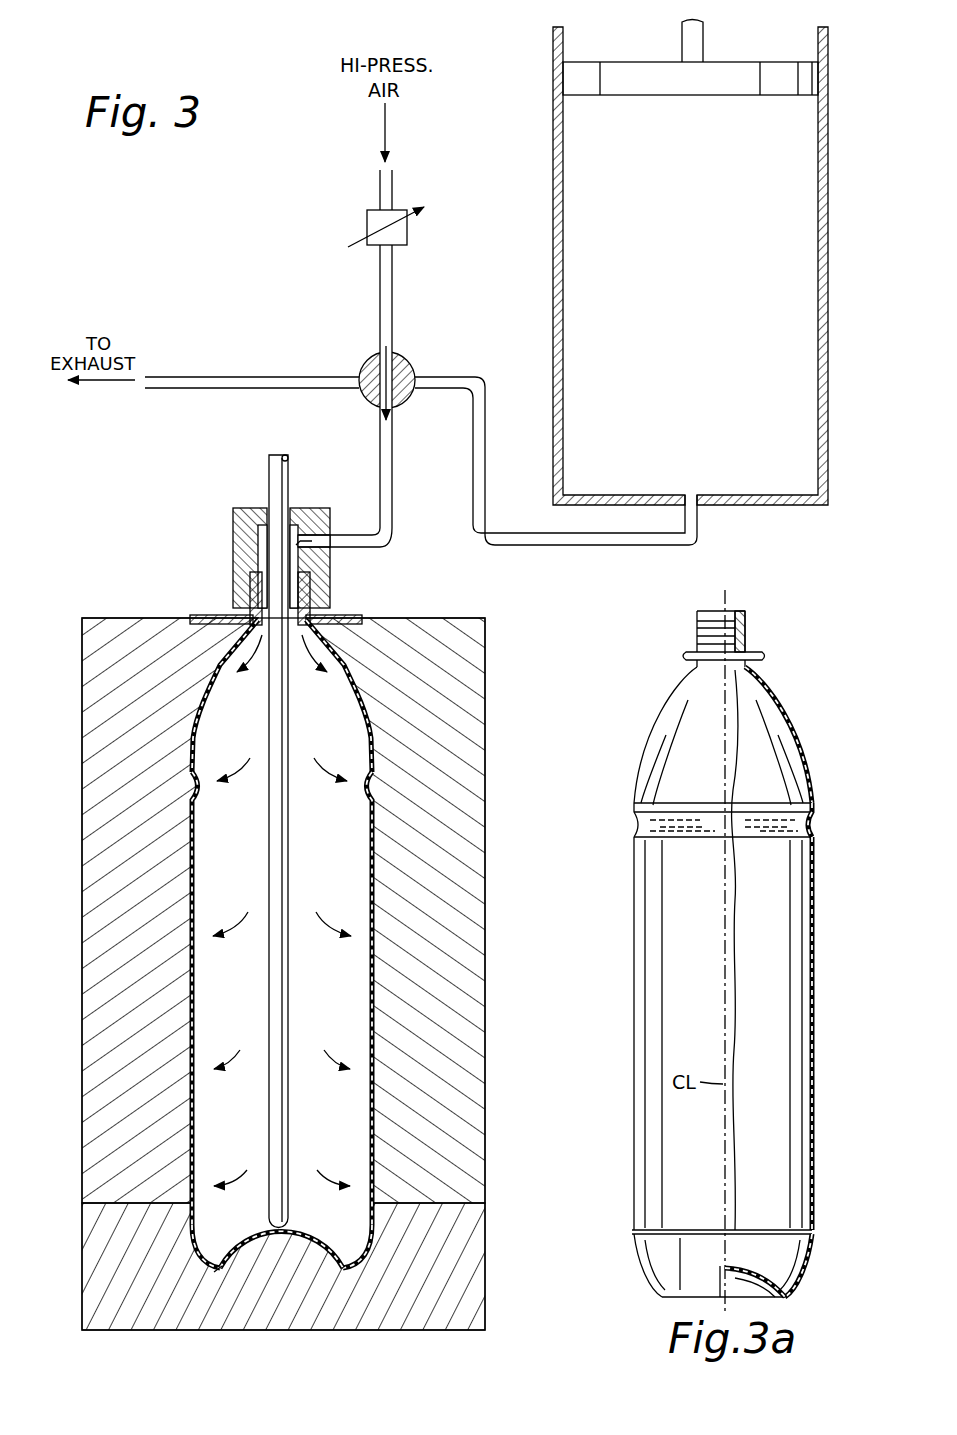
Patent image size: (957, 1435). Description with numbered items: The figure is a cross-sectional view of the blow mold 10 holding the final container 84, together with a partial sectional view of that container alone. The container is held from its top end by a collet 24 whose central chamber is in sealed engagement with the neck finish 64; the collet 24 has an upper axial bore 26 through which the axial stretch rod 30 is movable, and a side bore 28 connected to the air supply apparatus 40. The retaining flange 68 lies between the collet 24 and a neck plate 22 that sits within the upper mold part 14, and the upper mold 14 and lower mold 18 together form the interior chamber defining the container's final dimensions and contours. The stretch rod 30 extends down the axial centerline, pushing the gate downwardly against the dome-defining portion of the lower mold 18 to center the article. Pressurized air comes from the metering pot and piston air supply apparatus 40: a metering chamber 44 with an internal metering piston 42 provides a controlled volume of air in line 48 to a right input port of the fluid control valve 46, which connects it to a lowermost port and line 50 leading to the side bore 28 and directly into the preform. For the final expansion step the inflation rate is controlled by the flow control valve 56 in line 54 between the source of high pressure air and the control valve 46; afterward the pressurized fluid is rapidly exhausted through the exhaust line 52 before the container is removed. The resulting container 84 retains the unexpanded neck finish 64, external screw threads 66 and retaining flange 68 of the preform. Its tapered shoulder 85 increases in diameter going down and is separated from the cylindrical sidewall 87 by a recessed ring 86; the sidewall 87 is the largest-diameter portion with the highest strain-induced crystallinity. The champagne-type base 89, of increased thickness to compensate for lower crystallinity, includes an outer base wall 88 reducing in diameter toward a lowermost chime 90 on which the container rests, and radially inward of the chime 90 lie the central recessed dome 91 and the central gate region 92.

In FIG. 3, the blow mold 10 is at (502, 636).
In FIG. 3, the upper mold part 14 is at (485, 712).
In FIG. 3, the lower mold 18 is at (485, 1274).
In FIG. 3, the neck plate 22 is at (348, 616).
In FIG. 3, the collet 24 is at (233, 513).
In FIG. 3, the upper axial bore 26 is at (270, 500).
In FIG. 3, the side bore 28 is at (310, 525).
In FIG. 3, the stretch rod 30 is at (286, 857).
In FIG. 3, the metering pot and piston air supply apparatus 40 is at (340, 336).
In FIG. 3, the metering piston 42 is at (713, 62).
In FIG. 3, the metering pot 44 is at (828, 318).
In FIG. 3, the fluid control valve 46 is at (410, 360).
In FIG. 3, the line 48 is at (486, 433).
In FIG. 3, the line 50 is at (393, 472).
In FIG. 3, the exhaust conduit 52 is at (256, 390).
In FIG. 3, the line 54 is at (397, 187).
In FIG. 3, the flow control valve 56 is at (408, 230).
In FIG. 3, the neck finish 64 is at (248, 585).
In FIG. 3A, the neck finish 64 is at (748, 626).
In FIG. 3A, the external screw threads 66 is at (697, 638).
In FIG. 3A, the retaining flange 68 is at (765, 657).
In FIG. 3, the final container 84 is at (380, 990).
In FIG. 3A, the final container 84 is at (816, 1003).
In FIG. 3, the tapered shoulder 85 is at (362, 696).
In FIG. 3A, the tapered shoulder 85 is at (788, 714).
In FIG. 3A, the recessed ring 86 is at (808, 824).
In FIG. 3, the cylindrical sidewall 87 is at (375, 868).
In FIG. 3A, the cylindrical sidewall 87 is at (815, 918).
In FIG. 3, the outer base wall 88 is at (368, 1252).
In FIG. 3A, the outer base wall 88 is at (808, 1268).
In FIG. 3, the base 89 is at (378, 1226).
In FIG. 3A, the base 89 is at (812, 1258).
In FIG. 3, the chime 90 is at (220, 1270).
In FIG. 3A, the chime 90 is at (790, 1295).
In FIG. 3, the central recessed dome 91 is at (316, 1242).
In FIG. 3A, the central recessed dome 91 is at (748, 1280).
In FIG. 3, the central gate region 92 is at (283, 1234).
In FIG. 3A, the central gate region 92 is at (720, 1296).